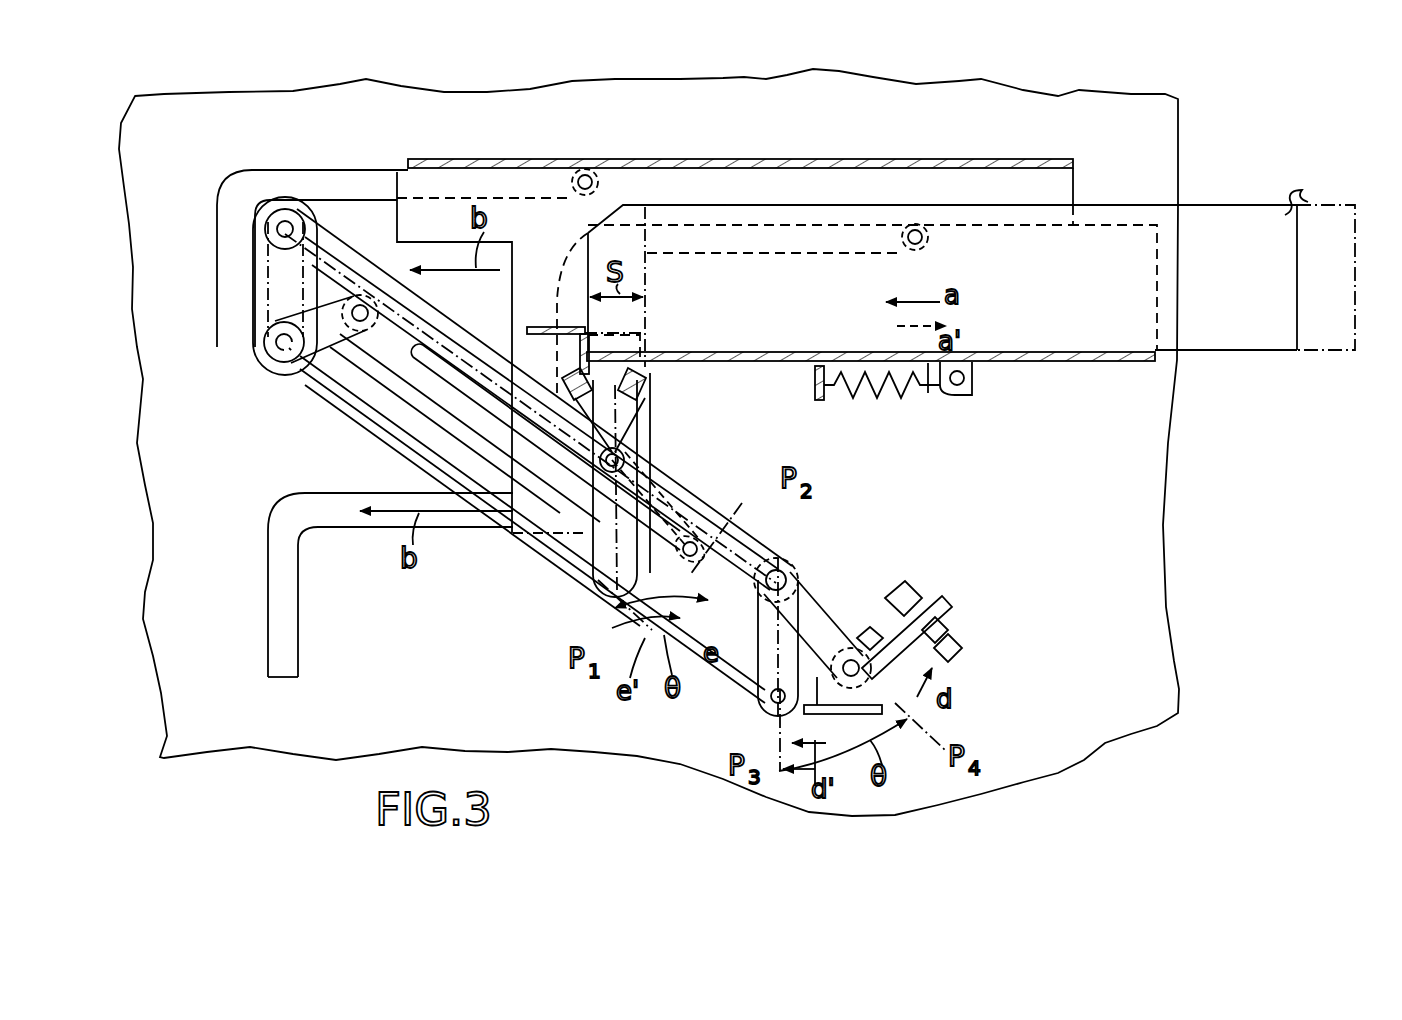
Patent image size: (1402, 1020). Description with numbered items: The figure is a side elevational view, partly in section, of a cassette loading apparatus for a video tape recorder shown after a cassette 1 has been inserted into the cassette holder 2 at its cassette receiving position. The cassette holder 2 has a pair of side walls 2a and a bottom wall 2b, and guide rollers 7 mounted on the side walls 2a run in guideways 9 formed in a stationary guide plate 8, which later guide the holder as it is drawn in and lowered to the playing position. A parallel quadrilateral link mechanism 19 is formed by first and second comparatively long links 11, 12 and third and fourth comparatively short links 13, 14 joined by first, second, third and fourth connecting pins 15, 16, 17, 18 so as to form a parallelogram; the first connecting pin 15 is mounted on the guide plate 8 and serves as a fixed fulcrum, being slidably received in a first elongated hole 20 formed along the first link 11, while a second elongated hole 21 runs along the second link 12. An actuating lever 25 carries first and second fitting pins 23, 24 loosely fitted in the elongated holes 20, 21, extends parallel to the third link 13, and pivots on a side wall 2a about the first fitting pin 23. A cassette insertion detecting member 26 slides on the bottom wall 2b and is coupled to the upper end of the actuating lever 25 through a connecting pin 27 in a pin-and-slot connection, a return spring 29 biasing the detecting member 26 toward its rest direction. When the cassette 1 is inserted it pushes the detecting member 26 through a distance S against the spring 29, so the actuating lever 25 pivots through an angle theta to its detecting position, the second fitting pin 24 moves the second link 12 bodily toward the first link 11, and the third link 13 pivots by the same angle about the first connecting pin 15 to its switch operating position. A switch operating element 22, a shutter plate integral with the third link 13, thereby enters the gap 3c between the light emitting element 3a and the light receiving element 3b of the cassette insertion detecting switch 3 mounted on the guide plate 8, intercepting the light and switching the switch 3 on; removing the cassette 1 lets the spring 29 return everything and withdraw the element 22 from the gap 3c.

The cassette 1 is at (1294, 192).
The cassette holder 2 is at (928, 152).
The side walls 2a is at (522, 532).
The bottom wall 2b is at (1064, 362).
The cassette insertion detecting switch 3 is at (964, 662).
The light emitting element 3a is at (916, 585).
The light receiving element 3b is at (962, 650).
The gap 3c is at (948, 630).
The guide rollers 7 is at (585, 172).
The guide plate 8 is at (1088, 690).
The guideways 9 is at (350, 172).
The first link 11 is at (772, 565).
The second link 12 is at (336, 345).
The third link 13 is at (806, 598).
The fourth link 14 is at (310, 262).
The first connecting pin 15 is at (786, 572).
The second connecting pin 16 is at (853, 657).
The third connecting pin 17 is at (282, 352).
The fourth connecting pin 18 is at (285, 220).
The parallel quadrilateral link mechanism 19 is at (528, 570).
The first elongated hole 20 is at (410, 312).
The second elongated hole 21 is at (430, 368).
The switch operating element 22 is at (938, 608).
The first fitting pin 23 is at (644, 440).
The second fitting pin 24 is at (687, 543).
The actuating lever 25 is at (668, 490).
The cassette insertion detecting member 26 is at (585, 330).
The connecting pin 27 is at (580, 374).
The return spring 29 is at (904, 394).